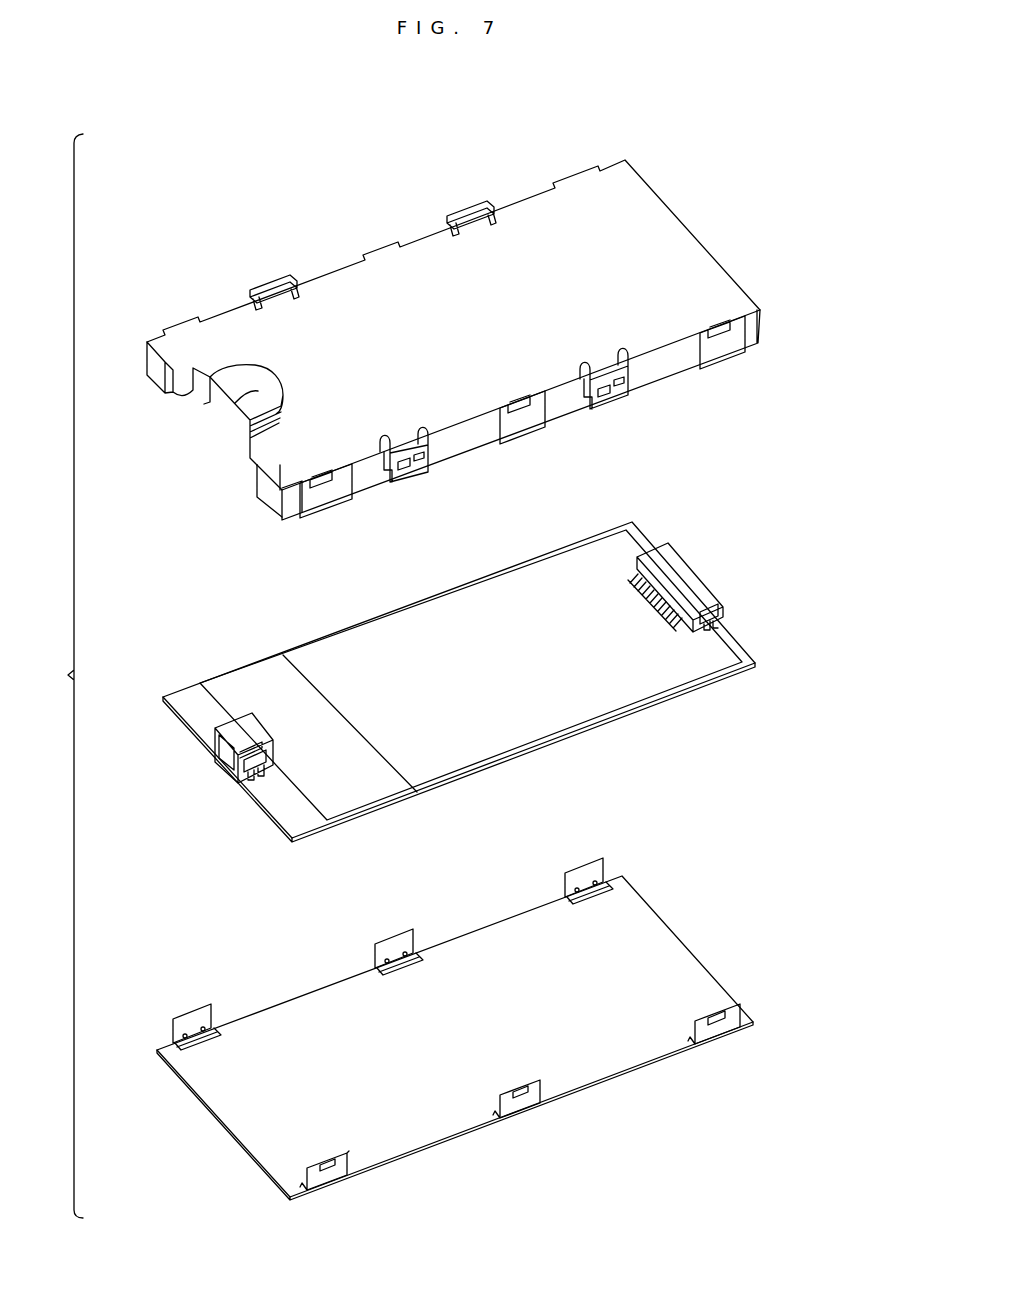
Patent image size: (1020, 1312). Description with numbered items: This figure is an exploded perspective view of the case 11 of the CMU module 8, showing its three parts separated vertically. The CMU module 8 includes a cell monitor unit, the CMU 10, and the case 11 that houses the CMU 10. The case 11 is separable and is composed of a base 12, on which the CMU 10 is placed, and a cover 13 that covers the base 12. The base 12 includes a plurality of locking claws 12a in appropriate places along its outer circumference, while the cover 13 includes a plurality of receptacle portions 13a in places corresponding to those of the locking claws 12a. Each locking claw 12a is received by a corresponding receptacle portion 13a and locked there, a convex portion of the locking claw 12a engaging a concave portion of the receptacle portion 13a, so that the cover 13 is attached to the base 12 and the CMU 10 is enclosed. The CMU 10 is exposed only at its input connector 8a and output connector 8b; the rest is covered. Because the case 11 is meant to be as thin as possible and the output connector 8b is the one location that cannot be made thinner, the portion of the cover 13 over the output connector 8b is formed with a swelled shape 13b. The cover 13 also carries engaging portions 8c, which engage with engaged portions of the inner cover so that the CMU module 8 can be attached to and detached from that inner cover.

The CMU module 8 is at (154, 196).
The input connector 8a is at (693, 595).
The output connector 8b is at (222, 762).
The engaging portions 8c is at (257, 275).
The cell monitor unit 10 is at (724, 549).
The case 11 is at (457, 663).
The base 12 is at (714, 919).
The locking claws 12a is at (585, 878).
The cover 13 is at (719, 209).
The receptacle portions 13a is at (177, 309).
The swelled shape 13b is at (247, 396).